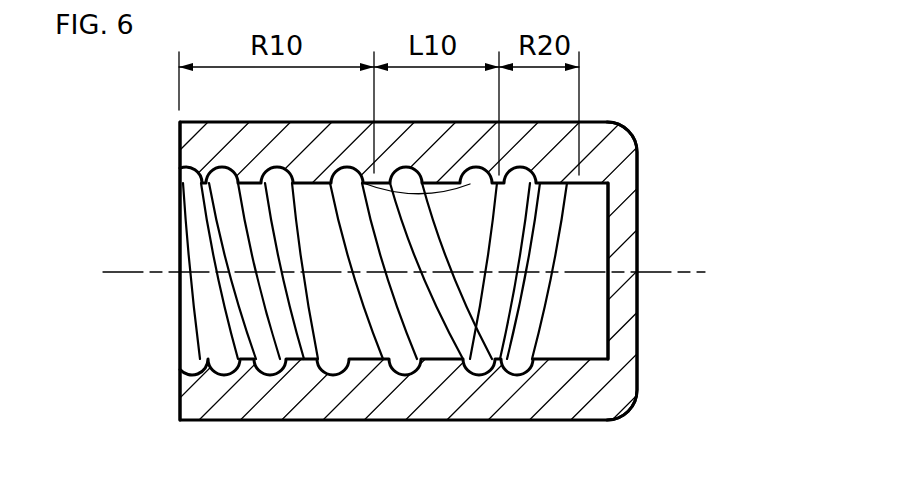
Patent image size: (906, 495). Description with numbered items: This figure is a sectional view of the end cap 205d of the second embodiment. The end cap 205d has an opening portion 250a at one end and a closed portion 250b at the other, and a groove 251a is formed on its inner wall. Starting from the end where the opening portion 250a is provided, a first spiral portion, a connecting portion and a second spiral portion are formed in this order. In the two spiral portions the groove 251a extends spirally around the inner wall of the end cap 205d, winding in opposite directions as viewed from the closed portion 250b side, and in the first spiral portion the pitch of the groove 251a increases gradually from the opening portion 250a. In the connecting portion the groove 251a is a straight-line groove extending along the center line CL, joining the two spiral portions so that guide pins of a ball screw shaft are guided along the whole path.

The end cap 205d is at (590, 392).
The groove 251a is at (383, 350).
The opening portion 250a is at (180, 334).
The closed portion 250b is at (640, 334).
The center line CL is at (678, 272).